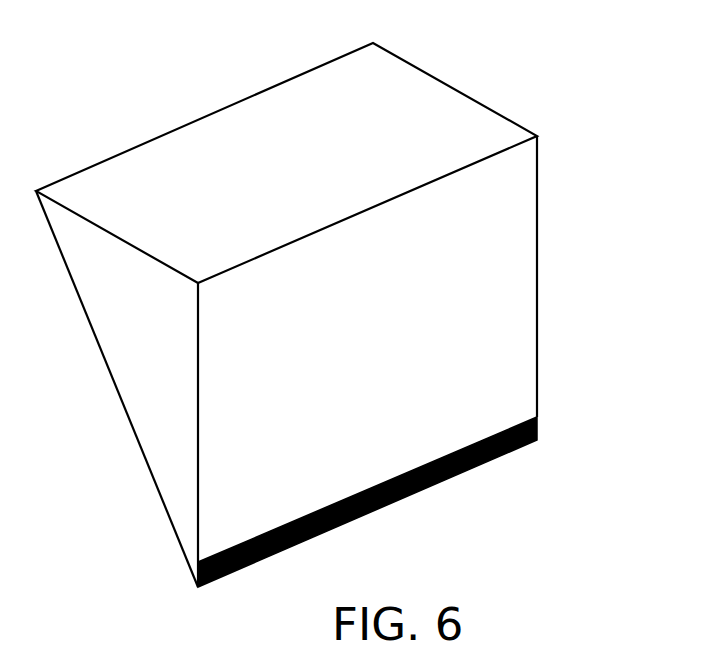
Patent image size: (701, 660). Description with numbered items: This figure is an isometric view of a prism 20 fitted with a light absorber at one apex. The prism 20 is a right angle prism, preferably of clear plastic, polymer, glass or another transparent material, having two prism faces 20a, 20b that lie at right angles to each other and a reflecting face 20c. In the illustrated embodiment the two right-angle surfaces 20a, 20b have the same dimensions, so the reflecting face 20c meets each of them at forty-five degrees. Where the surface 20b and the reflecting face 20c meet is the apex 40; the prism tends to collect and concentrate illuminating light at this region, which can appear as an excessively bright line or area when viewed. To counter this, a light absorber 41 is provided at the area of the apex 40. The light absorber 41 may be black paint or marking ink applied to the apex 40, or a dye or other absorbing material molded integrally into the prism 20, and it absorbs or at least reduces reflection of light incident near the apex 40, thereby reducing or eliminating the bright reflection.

The prism 20 is at (337, 334).
The prism face 20a is at (430, 107).
The prism face 20b is at (501, 303).
The reflecting face 20c is at (107, 368).
The apex 40 is at (192, 594).
The light absorber 41 is at (423, 490).